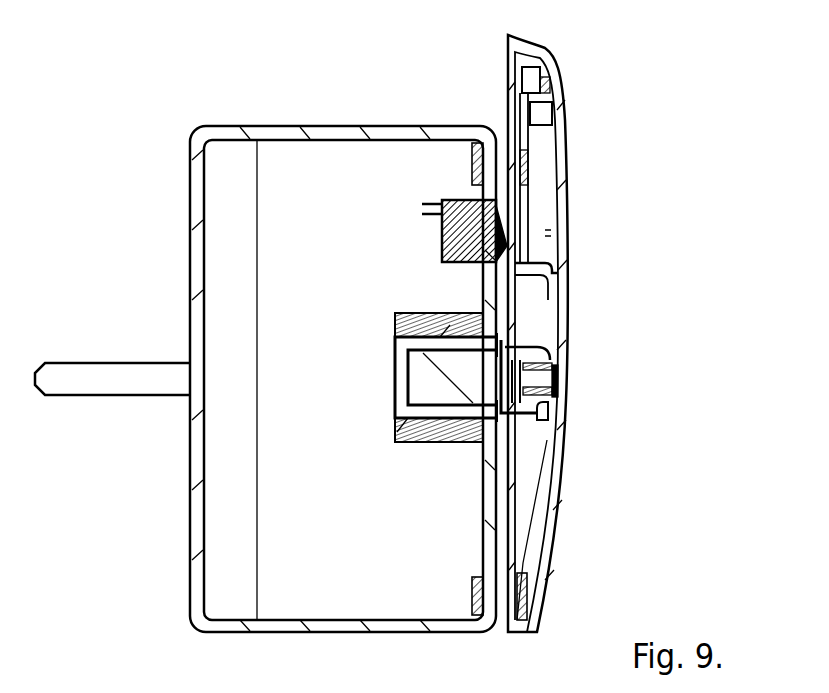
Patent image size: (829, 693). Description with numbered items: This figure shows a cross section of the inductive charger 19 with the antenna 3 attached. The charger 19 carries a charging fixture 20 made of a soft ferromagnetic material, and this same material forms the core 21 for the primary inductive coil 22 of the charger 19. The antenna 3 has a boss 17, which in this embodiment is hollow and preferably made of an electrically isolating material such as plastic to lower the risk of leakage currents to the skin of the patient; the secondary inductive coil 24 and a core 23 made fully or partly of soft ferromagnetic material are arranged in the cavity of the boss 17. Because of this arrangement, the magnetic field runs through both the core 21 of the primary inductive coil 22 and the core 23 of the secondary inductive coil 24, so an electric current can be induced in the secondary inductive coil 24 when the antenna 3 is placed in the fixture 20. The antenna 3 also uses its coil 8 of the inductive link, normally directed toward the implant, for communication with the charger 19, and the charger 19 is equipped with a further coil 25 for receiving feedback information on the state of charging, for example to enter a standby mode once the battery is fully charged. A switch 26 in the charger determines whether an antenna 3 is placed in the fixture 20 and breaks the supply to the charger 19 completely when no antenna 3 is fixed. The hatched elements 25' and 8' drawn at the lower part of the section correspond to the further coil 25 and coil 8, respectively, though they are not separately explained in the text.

The charger 19 is at (265, 105).
The switch 26 is at (455, 205).
The further coil 25 is at (449, 105).
The antenna 3 is at (571, 68).
The coil 8 is at (600, 177).
The primary inductive coil 22 is at (400, 320).
The core 21 is at (430, 385).
The boss 17 is at (540, 340).
The core 23 is at (550, 375).
The secondary inductive coil 24 is at (558, 388).
The fixture 20 is at (528, 420).
The damping element 25' is at (585, 581).
The inner wall 8' is at (600, 603).